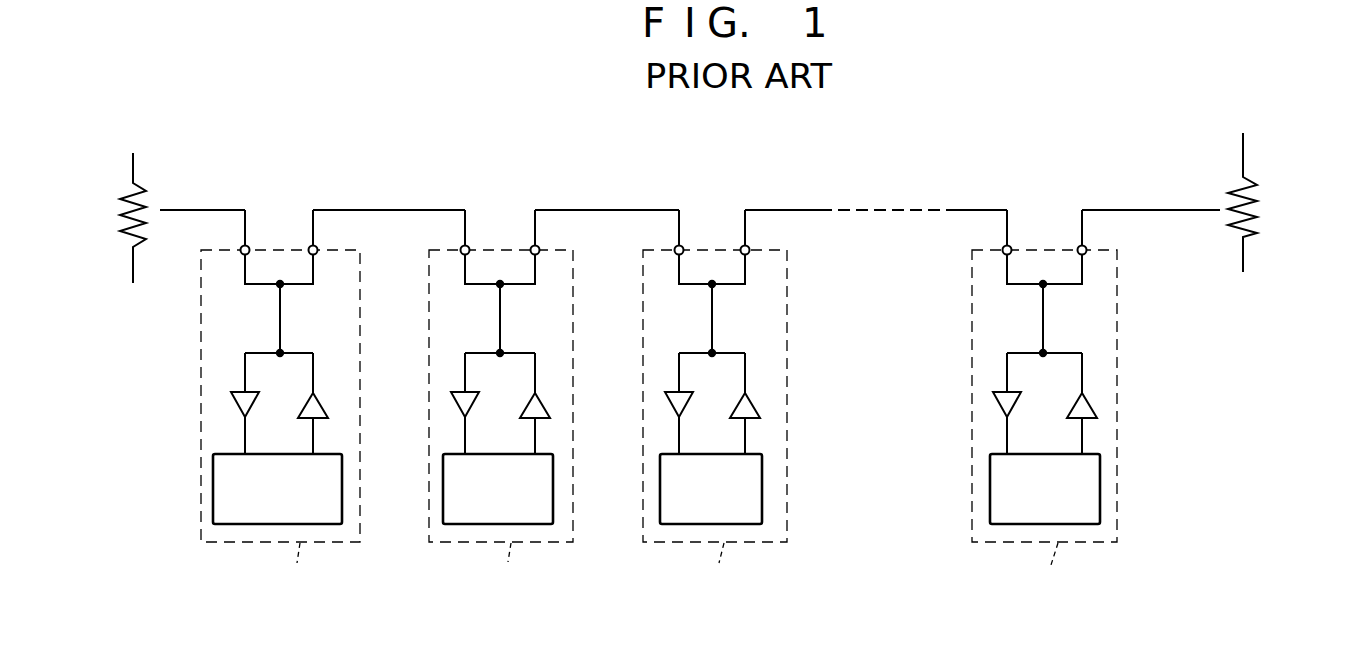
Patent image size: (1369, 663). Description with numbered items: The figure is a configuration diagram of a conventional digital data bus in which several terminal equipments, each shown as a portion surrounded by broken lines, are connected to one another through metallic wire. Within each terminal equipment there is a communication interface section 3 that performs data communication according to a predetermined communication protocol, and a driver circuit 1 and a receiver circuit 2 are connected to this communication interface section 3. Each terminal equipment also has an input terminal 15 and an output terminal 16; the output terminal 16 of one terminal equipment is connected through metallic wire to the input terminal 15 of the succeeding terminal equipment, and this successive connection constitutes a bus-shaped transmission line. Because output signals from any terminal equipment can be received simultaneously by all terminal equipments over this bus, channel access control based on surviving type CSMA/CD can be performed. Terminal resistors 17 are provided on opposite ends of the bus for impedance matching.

The driver circuit 1 is at (329, 405).
The receiver circuit 2 is at (232, 397).
The communication interface section 3 is at (229, 526).
The input terminal 15 is at (242, 249).
The output terminal 16 is at (317, 249).
The terminal resistors 17 is at (120, 210).